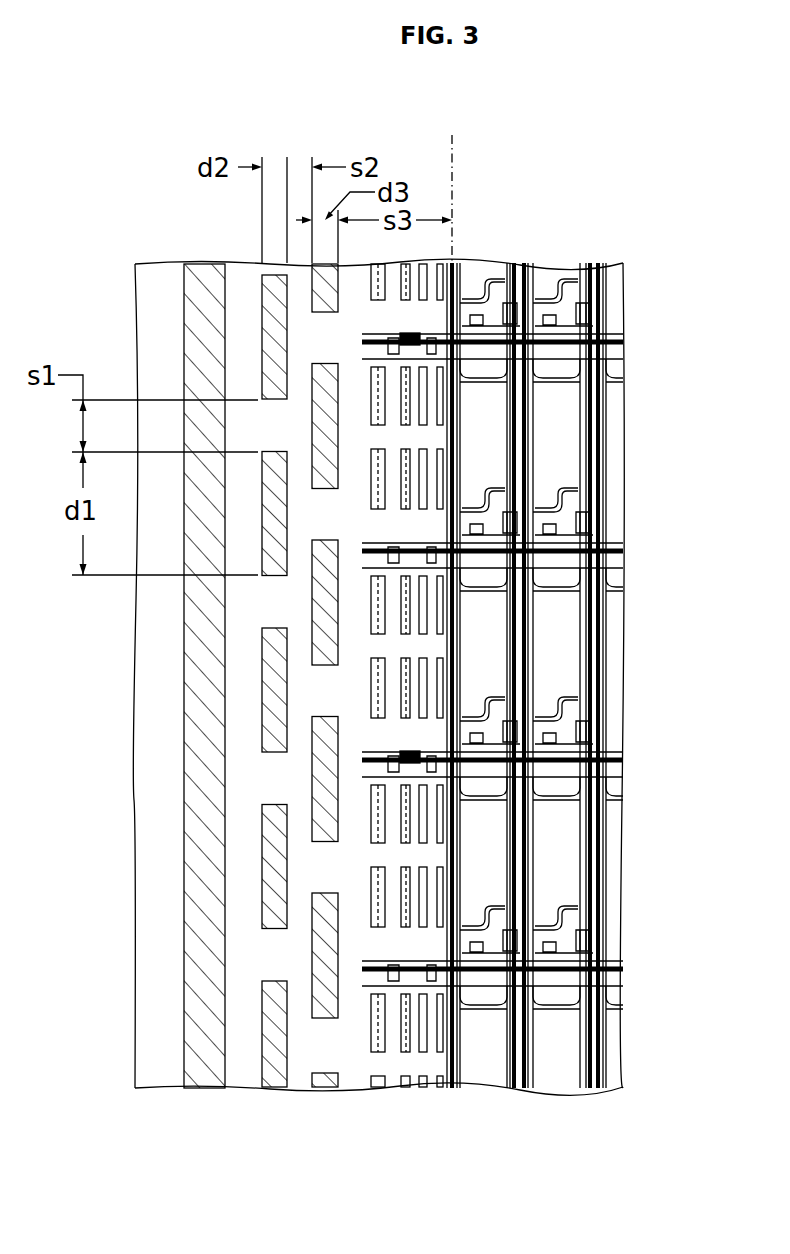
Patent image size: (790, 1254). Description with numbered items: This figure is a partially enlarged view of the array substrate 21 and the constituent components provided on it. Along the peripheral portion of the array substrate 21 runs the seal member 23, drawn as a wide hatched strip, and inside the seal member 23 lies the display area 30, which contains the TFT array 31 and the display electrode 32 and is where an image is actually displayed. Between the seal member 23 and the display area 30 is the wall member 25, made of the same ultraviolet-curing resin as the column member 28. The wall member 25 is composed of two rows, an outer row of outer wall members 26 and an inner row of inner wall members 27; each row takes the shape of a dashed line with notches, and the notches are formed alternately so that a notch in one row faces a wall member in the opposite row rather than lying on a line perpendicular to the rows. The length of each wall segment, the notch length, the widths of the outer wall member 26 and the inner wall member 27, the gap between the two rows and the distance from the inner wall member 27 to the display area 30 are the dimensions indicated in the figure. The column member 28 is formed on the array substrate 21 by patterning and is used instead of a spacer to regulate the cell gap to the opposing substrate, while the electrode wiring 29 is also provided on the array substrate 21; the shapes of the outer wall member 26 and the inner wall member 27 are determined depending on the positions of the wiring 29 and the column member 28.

The array substrate 21 is at (134, 675).
The seal member 23 is at (184, 762).
The wall member 25 is at (278, 721).
The outer wall member 26 is at (262, 1060).
The inner wall member 27 is at (317, 1018).
The column member 28 is at (410, 335).
The electrode (wiring) 29 is at (400, 1047).
The display area 30 is at (452, 135).
The TFT array 31 is at (606, 506).
The display electrode 32 is at (570, 453).